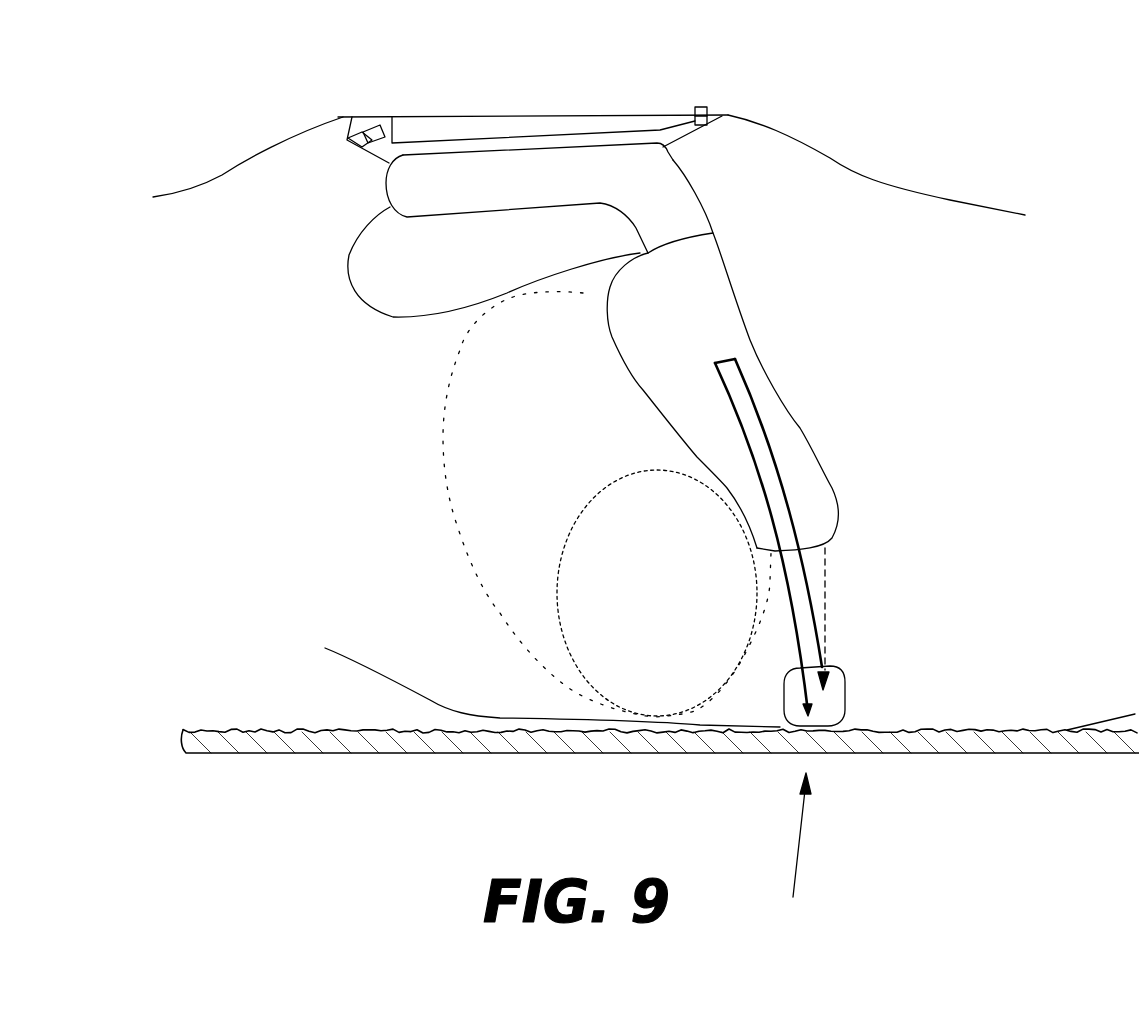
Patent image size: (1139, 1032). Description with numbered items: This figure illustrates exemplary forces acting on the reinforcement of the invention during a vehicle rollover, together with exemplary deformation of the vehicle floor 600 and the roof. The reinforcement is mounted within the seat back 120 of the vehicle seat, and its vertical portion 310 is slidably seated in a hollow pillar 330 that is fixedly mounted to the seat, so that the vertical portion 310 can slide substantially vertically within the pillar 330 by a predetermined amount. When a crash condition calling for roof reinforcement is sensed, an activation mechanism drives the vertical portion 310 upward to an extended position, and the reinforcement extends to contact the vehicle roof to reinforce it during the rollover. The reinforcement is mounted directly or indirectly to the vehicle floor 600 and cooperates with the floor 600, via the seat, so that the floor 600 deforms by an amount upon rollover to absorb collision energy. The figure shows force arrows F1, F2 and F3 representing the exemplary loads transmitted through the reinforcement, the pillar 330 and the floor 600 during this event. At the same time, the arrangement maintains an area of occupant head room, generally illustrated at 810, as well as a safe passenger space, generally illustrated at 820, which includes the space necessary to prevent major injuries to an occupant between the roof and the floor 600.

The vehicle floor 600 is at (300, 128).
The seat back portion 120 is at (707, 278).
The hollow pillar 330 is at (767, 415).
The vertical portion 310 is at (798, 588).
The occupant head room 810 is at (558, 594).
The safe passenger space 820 is at (460, 533).
The reaction force F1 is at (797, 870).
The applied force F2 is at (798, 640).
The vertical force F3 is at (825, 609).